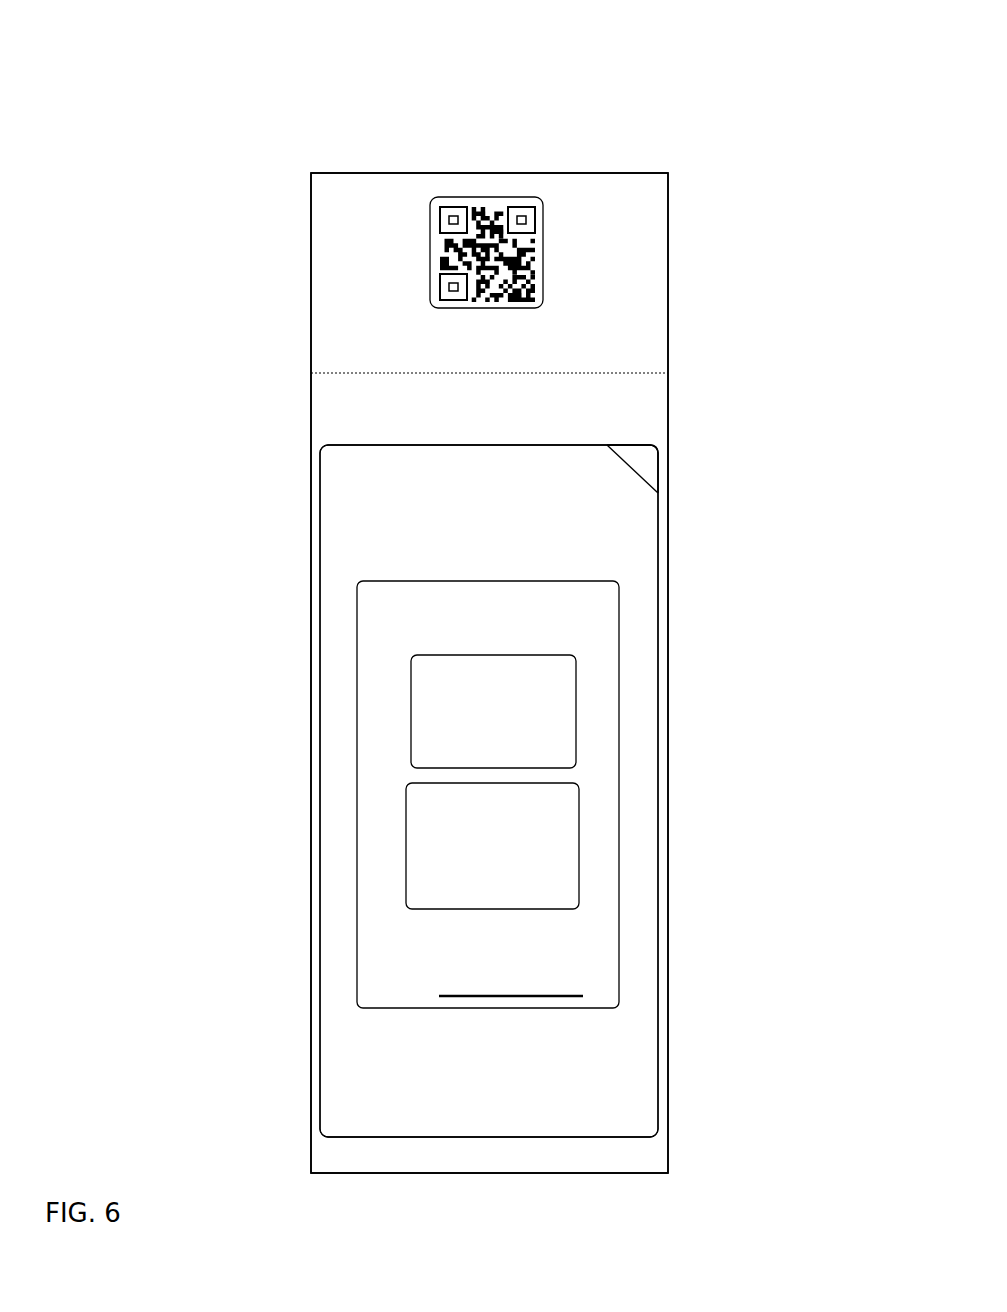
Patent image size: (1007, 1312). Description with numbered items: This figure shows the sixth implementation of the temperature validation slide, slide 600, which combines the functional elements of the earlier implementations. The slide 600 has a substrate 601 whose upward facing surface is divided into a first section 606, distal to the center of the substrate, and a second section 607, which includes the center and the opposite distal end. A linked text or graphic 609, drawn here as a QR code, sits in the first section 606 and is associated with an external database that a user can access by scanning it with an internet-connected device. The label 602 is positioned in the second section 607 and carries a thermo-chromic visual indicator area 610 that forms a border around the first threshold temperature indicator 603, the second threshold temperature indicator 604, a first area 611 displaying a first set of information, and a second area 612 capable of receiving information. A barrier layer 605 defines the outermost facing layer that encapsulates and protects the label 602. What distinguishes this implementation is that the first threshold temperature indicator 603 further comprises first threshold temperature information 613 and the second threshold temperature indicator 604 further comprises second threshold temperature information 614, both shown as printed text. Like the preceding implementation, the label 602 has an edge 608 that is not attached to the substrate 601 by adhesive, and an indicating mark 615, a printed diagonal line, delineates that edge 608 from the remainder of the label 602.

The slide 600 is at (218, 88).
The substrate 601 is at (310, 322).
The label 602 is at (657, 560).
The first threshold temperature indicator 603 is at (433, 753).
The second threshold temperature indicator 604 is at (437, 898).
The barrier layer 605 is at (603, 937).
The first section 606 is at (333, 268).
The second section 607 is at (332, 413).
The edge 608 is at (647, 462).
The linked text or graphic 609 is at (543, 257).
The thermo-chromic visual indicator area 610 is at (350, 515).
The first area 611 is at (398, 615).
The second area 612 is at (387, 975).
The first threshold temperature information 613 is at (573, 702).
The second threshold temperature information 614 is at (573, 852).
The indicating mark 615 is at (633, 468).